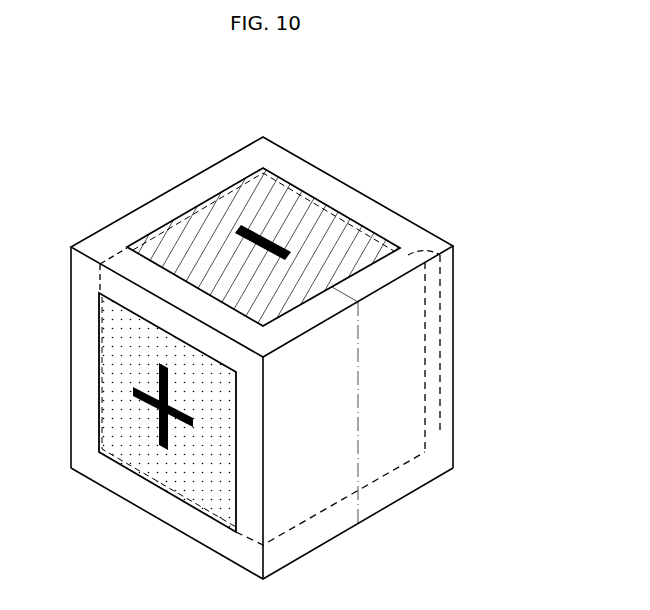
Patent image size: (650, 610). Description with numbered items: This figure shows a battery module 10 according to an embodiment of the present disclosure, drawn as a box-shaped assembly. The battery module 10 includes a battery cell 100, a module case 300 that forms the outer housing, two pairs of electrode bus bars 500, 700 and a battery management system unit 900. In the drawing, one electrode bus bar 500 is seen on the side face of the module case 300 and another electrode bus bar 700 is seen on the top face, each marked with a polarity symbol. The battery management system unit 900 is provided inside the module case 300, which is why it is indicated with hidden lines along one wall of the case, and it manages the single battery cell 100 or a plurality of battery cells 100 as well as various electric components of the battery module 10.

The battery module 10 is at (183, 107).
The battery cell 100 is at (398, 470).
The module case 300 is at (396, 223).
The electrode bus bar 500 is at (114, 372).
The electrode bus bar 700 is at (306, 205).
The battery management system (BMS) unit 900 is at (440, 432).